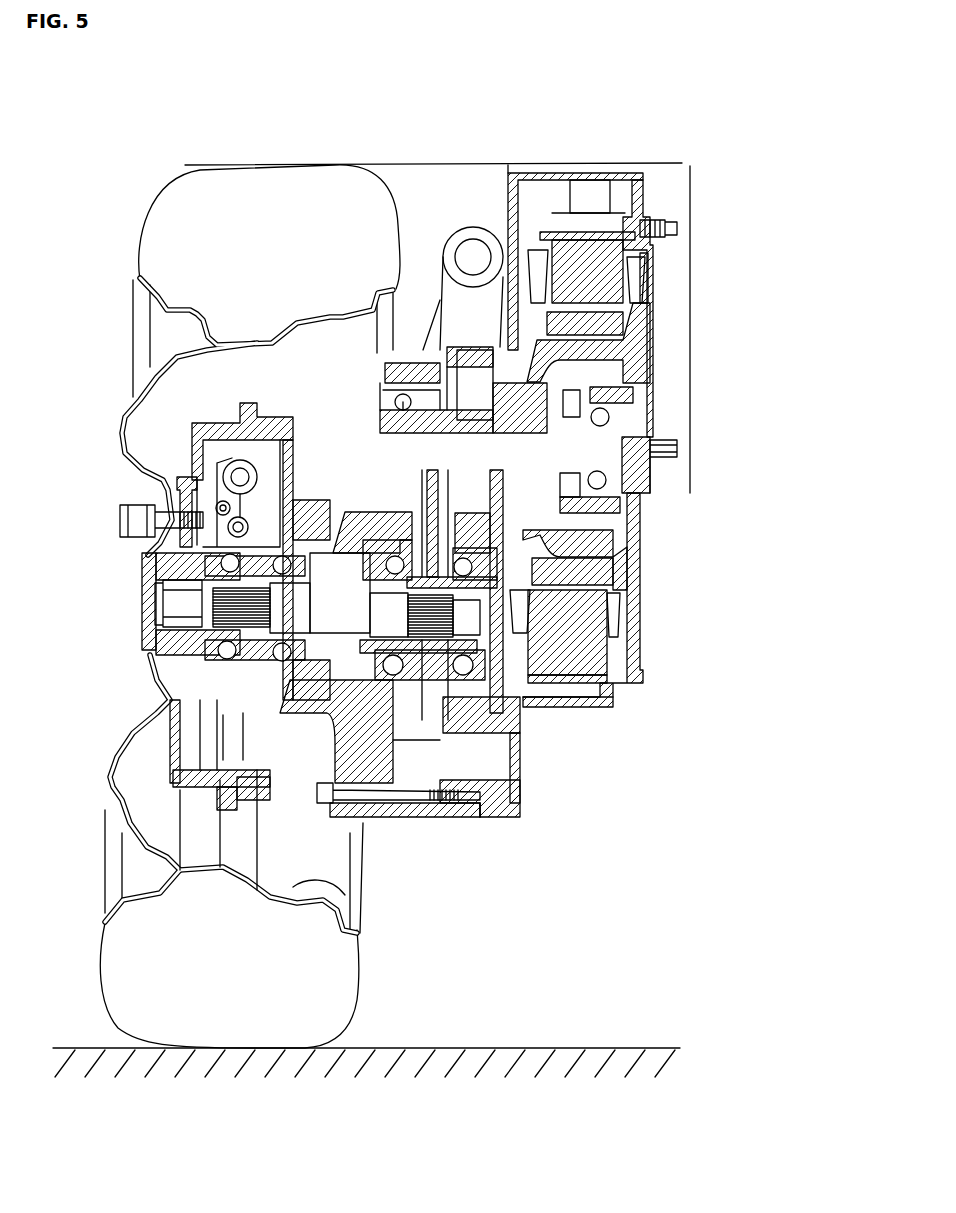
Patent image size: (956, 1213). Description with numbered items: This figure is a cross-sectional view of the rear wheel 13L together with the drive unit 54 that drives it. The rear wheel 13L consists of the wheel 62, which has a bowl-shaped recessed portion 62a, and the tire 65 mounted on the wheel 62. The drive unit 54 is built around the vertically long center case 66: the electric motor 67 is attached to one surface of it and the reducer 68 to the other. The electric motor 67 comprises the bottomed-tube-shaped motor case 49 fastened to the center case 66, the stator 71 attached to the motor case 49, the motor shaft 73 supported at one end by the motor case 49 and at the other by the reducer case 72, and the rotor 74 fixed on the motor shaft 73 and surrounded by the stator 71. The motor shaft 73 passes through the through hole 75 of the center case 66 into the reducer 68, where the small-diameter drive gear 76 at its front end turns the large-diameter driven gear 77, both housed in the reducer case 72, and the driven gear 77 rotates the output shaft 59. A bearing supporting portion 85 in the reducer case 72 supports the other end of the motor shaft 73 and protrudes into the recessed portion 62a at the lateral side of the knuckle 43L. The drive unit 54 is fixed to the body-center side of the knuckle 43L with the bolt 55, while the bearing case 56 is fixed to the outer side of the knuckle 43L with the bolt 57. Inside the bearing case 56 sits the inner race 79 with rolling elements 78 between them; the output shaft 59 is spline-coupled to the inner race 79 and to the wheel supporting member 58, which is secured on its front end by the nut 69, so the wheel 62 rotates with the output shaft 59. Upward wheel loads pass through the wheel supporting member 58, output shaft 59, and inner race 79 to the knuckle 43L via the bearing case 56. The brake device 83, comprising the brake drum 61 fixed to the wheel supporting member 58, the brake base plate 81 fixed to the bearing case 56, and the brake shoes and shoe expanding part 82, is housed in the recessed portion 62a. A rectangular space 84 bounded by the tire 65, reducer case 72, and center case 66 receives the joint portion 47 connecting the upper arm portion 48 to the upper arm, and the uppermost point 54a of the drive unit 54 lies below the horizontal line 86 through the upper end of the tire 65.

The rear wheel 13L is at (148, 166).
The tire 65 is at (142, 235).
The wheel 62 is at (133, 410).
The recessed portion 62a is at (345, 895).
The horizontal line 86 is at (395, 165).
The rectangular space 84 is at (465, 182).
The upper arm portion 48 is at (450, 232).
The joint portion 47 is at (483, 228).
The uppermost point of the drive unit 54a is at (510, 165).
The through hole 75 is at (490, 365).
The drive gear 76 is at (437, 407).
The bearing supporting portion 85 is at (385, 375).
The motor shaft 73 is at (385, 420).
The bearing case 56 is at (290, 505).
The inner race 79 is at (292, 530).
The rolling elements 78 is at (300, 548).
The stator 71 is at (605, 273).
The rotor 74 is at (612, 318).
The wheel supporting member 58 is at (142, 573).
The output shaft 59 is at (160, 600).
The nut 69 is at (160, 632).
The bolt 57 is at (160, 690).
The knuckle 43L is at (330, 720).
The bolt 55 is at (322, 800).
The reducer case 72 is at (395, 818).
The driven gear 77 is at (425, 800).
The reducer 68 is at (410, 826).
The center case 66 is at (475, 816).
The motor case 49 is at (610, 713).
The electric motor 67 is at (565, 723).
The drive unit 54 is at (548, 817).
The brake drum 61 is at (180, 790).
The shoe expanding part 82 is at (220, 780).
The brake base plate 81 is at (257, 775).
The brake device 83 is at (262, 975).